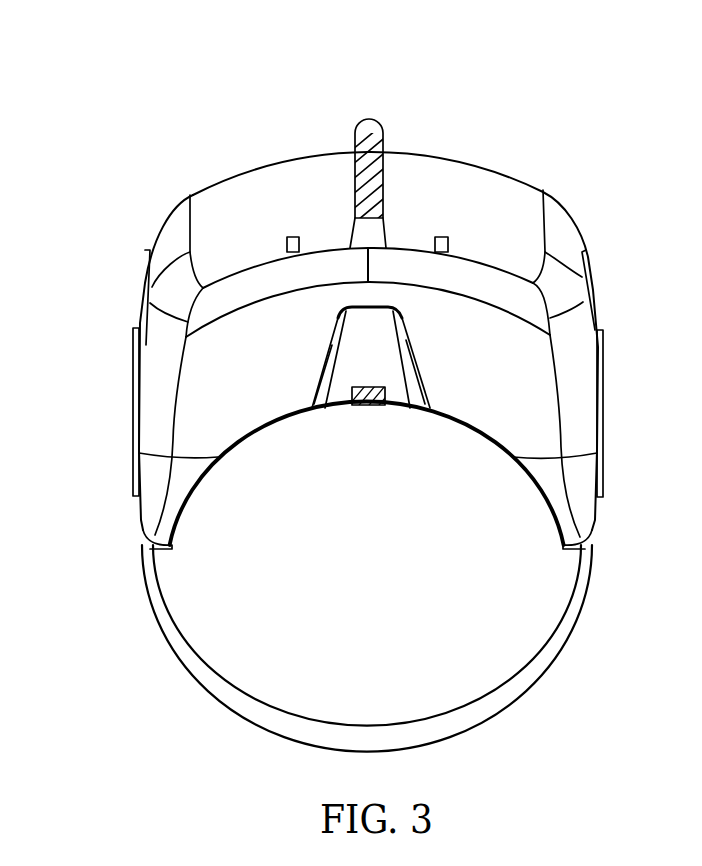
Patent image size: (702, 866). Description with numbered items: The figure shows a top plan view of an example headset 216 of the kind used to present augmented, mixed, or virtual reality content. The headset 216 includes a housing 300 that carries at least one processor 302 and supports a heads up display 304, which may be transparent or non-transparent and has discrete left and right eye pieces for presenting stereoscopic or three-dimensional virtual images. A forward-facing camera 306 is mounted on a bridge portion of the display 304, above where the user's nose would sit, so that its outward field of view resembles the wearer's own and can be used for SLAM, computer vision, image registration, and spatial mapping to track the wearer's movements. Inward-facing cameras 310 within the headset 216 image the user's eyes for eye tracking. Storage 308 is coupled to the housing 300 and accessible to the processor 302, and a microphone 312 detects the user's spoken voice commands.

The headset 216 is at (114, 60).
The housing 300 is at (573, 612).
The processor 302 is at (254, 305).
The heads up display 304 is at (262, 167).
The forward-facing camera 306 is at (377, 127).
The storage 308 is at (463, 295).
The inward-facing cameras 310 is at (290, 236).
The microphone 312 is at (372, 407).